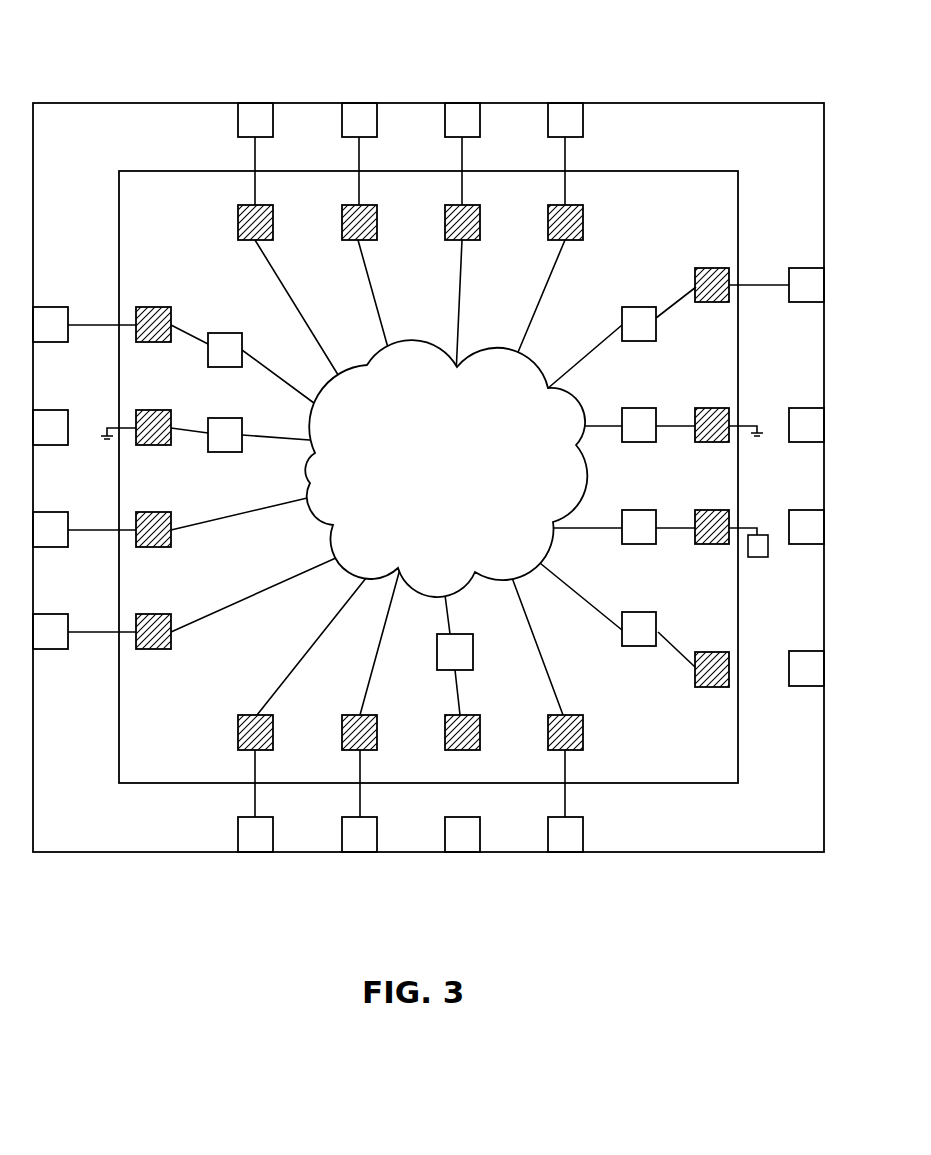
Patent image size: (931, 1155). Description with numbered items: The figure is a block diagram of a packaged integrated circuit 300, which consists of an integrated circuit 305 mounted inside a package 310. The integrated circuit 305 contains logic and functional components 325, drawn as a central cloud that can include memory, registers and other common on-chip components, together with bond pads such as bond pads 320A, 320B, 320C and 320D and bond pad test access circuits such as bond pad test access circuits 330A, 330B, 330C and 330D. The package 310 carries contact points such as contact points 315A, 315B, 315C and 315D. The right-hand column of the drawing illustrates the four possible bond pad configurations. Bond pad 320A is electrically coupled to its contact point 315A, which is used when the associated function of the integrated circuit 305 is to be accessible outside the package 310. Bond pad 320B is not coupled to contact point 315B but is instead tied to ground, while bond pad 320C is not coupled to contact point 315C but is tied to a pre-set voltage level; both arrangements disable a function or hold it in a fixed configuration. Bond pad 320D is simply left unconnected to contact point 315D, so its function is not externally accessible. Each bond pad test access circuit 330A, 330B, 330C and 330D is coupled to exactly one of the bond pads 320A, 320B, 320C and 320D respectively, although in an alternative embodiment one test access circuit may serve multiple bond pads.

The packaged integrated circuit 300 is at (789, 30).
The integrated circuit 305 is at (717, 170).
The package 310 is at (797, 101).
The contact point 315A is at (800, 268).
The contact point 315B is at (805, 408).
The contact point 315C is at (805, 544).
The contact point 315D is at (805, 686).
The bond pad 320A is at (703, 268).
The bond pad 320B is at (710, 408).
The bond pad 320C is at (714, 544).
The bond pad 320D is at (712, 687).
The logic and functional components 325 is at (368, 363).
The bond pad test access circuit 330A is at (637, 307).
The bond pad test access circuit 330B is at (638, 408).
The bond pad test access circuit 330C is at (640, 544).
The bond pad test access circuit 330D is at (640, 647).